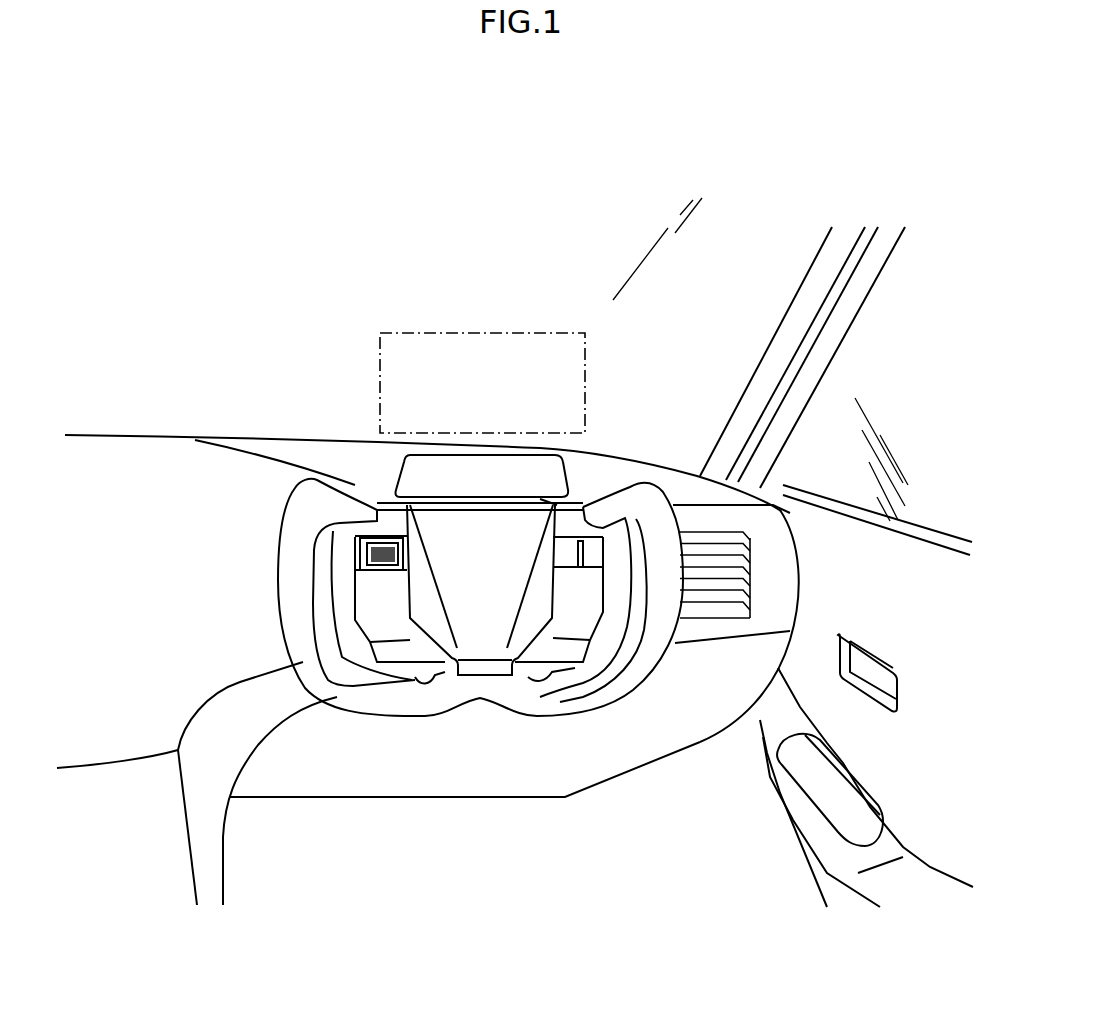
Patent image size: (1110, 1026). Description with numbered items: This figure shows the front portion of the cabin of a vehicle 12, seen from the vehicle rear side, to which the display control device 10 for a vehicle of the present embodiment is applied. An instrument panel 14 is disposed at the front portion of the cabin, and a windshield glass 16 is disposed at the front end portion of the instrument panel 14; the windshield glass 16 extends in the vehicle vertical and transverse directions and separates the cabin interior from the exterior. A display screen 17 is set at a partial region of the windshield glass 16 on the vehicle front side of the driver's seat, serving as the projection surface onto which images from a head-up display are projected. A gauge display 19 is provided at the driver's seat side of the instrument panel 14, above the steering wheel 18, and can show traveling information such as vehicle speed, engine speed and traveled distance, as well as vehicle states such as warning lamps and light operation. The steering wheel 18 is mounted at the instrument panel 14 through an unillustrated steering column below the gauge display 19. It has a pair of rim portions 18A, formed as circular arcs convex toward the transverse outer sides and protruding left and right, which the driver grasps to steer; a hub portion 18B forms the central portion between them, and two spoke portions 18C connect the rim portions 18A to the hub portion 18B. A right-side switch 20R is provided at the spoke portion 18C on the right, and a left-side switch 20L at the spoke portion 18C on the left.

The display control device for a vehicle 10 is at (362, 230).
The vehicle 12 is at (515, 696).
The instrument panel 14 is at (230, 436).
The windshield glass 16 is at (750, 290).
The display screen 17 is at (447, 333).
The steering wheel 18 is at (348, 484).
The rim portions 18A is at (285, 643).
The hub portion 18B is at (478, 628).
The spoke portions 18C is at (342, 657).
The gauge display 19 is at (567, 477).
The left-side switch 20L is at (343, 583).
The right-side switch 20R is at (640, 593).